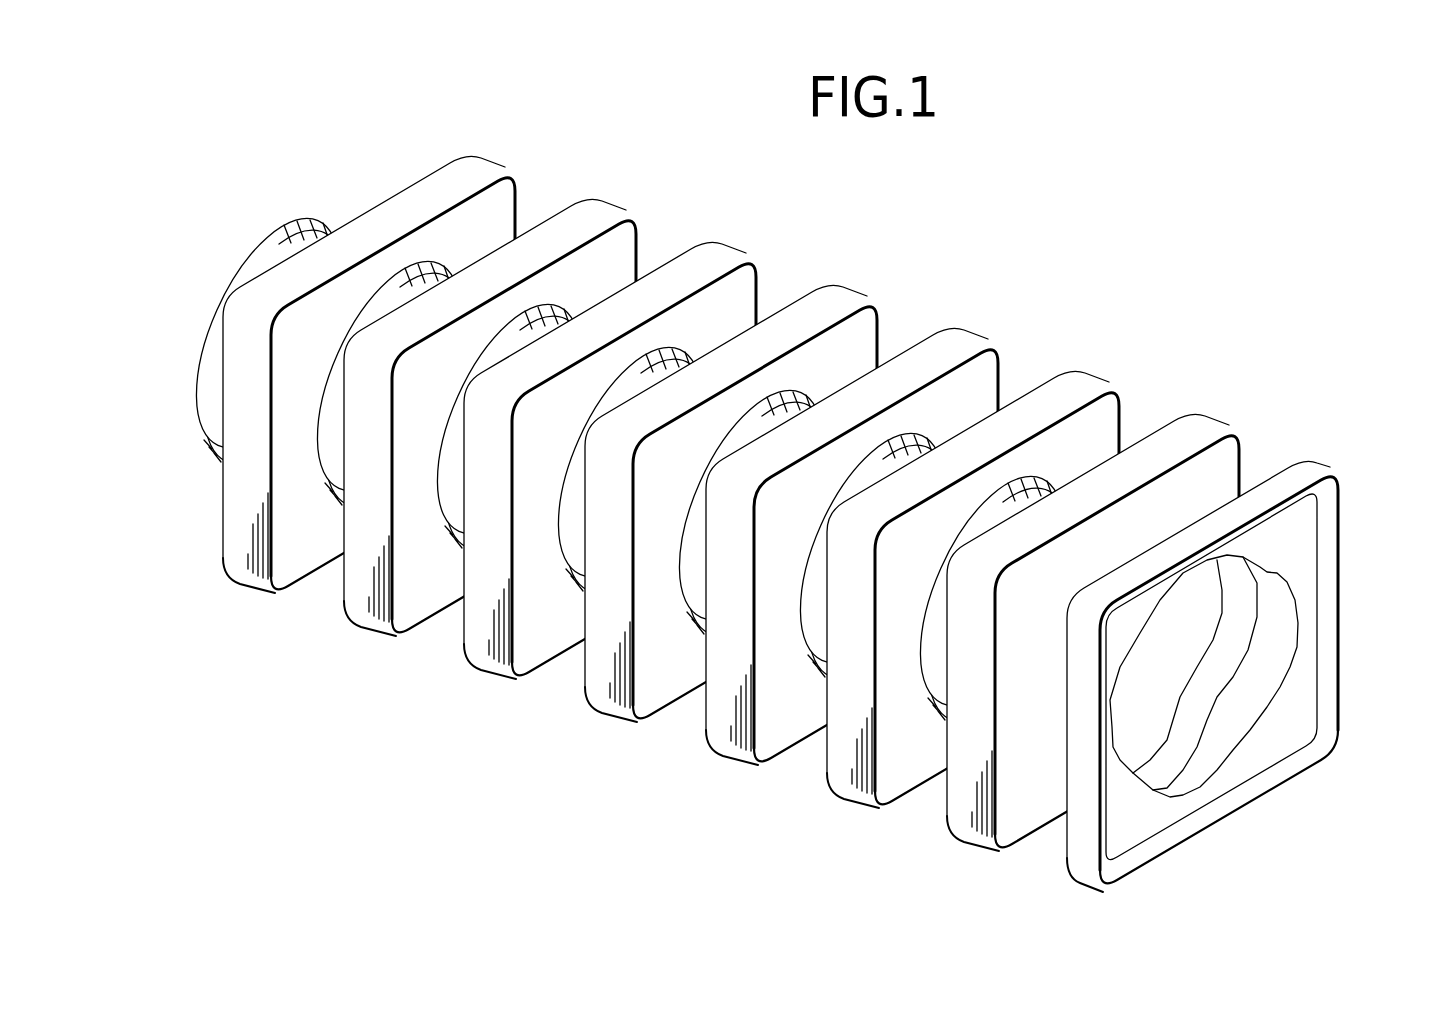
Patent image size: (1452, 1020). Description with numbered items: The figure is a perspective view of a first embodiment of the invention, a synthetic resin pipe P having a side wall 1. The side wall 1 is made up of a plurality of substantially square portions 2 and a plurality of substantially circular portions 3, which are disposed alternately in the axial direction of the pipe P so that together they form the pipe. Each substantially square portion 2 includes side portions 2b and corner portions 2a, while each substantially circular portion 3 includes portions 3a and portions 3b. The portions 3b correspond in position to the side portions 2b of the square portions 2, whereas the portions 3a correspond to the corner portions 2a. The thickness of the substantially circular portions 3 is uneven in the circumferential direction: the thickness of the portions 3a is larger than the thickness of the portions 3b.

The side wall 1 is at (1072, 387).
The substantially square portion 2 is at (703, 470).
The corner portion 2a is at (583, 222).
The side portion 2b is at (493, 260).
The substantially circular portion 3 is at (790, 415).
The portion of circular portion corresponding to corner portion 3a is at (1277, 720).
The portion of circular portion corresponding to side portion 3b is at (1112, 730).
The synthetic resin pipe P is at (798, 503).